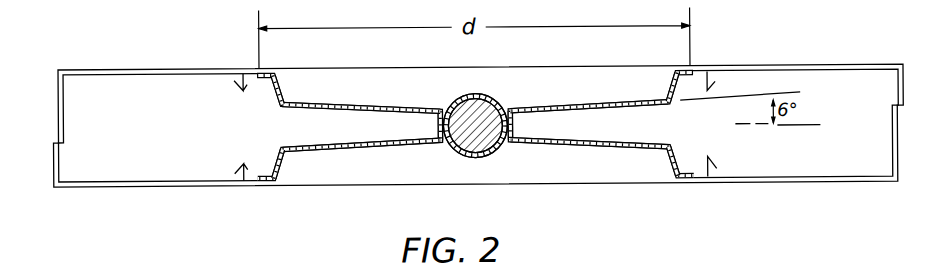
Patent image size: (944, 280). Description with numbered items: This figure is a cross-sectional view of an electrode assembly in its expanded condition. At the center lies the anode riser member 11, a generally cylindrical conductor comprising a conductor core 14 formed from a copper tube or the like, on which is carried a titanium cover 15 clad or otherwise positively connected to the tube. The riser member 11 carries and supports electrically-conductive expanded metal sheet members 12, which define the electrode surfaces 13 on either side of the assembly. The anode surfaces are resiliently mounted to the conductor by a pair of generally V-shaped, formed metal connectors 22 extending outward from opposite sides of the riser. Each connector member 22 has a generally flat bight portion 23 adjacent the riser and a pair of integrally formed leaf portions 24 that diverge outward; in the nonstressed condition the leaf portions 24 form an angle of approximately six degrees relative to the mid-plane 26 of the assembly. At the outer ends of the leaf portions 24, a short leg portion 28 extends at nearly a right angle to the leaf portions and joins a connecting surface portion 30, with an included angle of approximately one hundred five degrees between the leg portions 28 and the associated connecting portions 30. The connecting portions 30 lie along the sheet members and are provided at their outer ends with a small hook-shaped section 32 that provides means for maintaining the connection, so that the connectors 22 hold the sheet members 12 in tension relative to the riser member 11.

The anode riser member 11 is at (508, 159).
The expanded metal sheet members 12 is at (608, 69).
The electrode surfaces 13 is at (381, 71).
The conductor core 14 is at (497, 103).
The titanium cover 15 is at (455, 106).
The connectors 22 is at (287, 139).
The bight portion 23 is at (438, 123).
The leaf portions 24 is at (340, 146).
The mid-plane 26 is at (787, 130).
The leg portion 28 is at (279, 87).
The connecting surface portion 30 is at (263, 72).
The hook-shaped section 32 is at (716, 88).